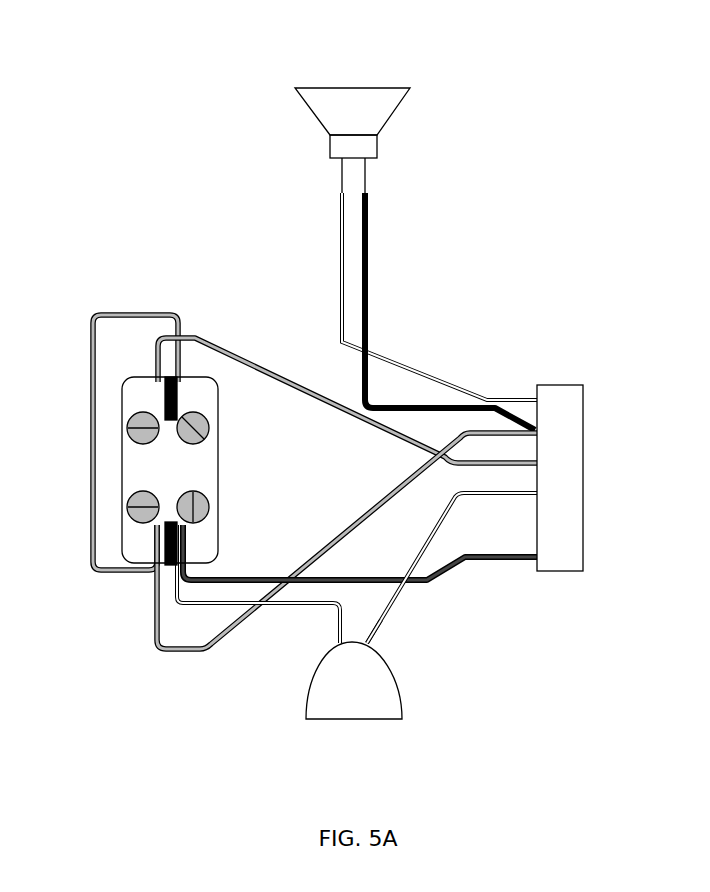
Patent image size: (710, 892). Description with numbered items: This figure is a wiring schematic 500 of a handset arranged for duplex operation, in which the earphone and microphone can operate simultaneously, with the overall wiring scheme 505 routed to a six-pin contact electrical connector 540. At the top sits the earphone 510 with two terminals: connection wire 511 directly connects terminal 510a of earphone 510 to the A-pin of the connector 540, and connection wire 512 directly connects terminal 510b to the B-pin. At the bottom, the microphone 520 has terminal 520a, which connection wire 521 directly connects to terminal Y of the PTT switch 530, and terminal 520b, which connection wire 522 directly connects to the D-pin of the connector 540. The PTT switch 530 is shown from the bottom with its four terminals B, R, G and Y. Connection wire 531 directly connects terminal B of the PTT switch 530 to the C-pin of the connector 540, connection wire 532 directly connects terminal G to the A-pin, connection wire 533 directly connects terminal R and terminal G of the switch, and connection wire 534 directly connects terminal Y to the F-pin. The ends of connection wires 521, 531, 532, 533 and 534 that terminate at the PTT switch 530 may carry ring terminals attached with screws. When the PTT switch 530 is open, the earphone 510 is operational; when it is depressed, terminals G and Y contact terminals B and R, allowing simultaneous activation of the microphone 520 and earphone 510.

The push-to-talk headset wiring system 500 is at (152, 80).
The wiring harness 505 is at (210, 181).
The earphone 510 is at (352, 99).
The terminal of earphone 510a is at (396, 175).
The terminal of earphone 510b is at (311, 175).
The connection wire 511 is at (450, 311).
The connection wire 512 is at (412, 296).
The microphone 520 is at (354, 708).
The terminal of microphone 520a is at (305, 634).
The terminal of microphone 520b is at (395, 638).
The connection wire 521 is at (258, 584).
The connection wire 522 is at (452, 568).
The PTT switch 530 is at (204, 471).
The connection wire 531 is at (347, 400).
The connection wire 532 is at (347, 560).
The connection wire 533 is at (135, 421).
The connection wire 534 is at (360, 559).
The 6-pin contact electrical connector 540 is at (560, 452).